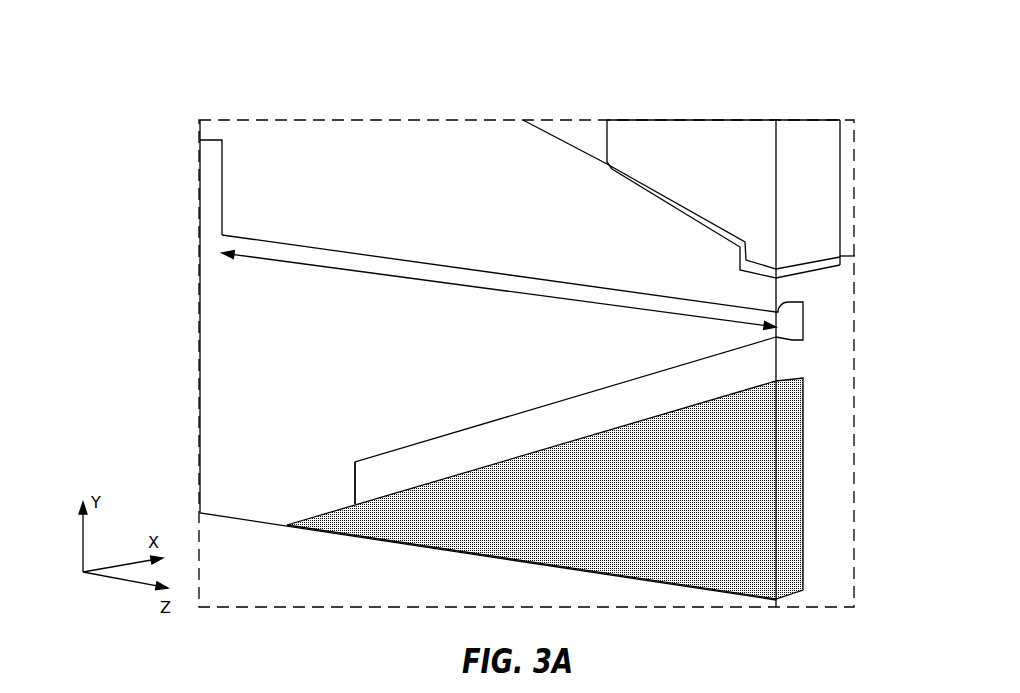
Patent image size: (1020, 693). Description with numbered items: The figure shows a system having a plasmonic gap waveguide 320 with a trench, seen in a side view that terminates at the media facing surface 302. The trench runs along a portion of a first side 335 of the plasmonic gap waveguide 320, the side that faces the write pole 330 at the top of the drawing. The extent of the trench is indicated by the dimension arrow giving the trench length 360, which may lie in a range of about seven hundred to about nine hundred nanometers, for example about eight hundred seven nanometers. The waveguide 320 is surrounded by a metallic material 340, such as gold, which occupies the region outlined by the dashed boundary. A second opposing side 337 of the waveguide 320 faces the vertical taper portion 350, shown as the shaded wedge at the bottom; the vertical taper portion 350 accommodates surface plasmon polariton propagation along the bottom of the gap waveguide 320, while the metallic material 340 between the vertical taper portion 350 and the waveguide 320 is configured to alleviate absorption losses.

The media facing surface 302 is at (797, 327).
The plasmonic gap waveguide 320 is at (207, 352).
The write pole 330 is at (693, 132).
The first side 335 is at (448, 263).
The second opposing side 337 is at (482, 427).
The metallic material 340 is at (463, 138).
The vertical taper portion 350 is at (462, 528).
The trench length 360 is at (443, 310).